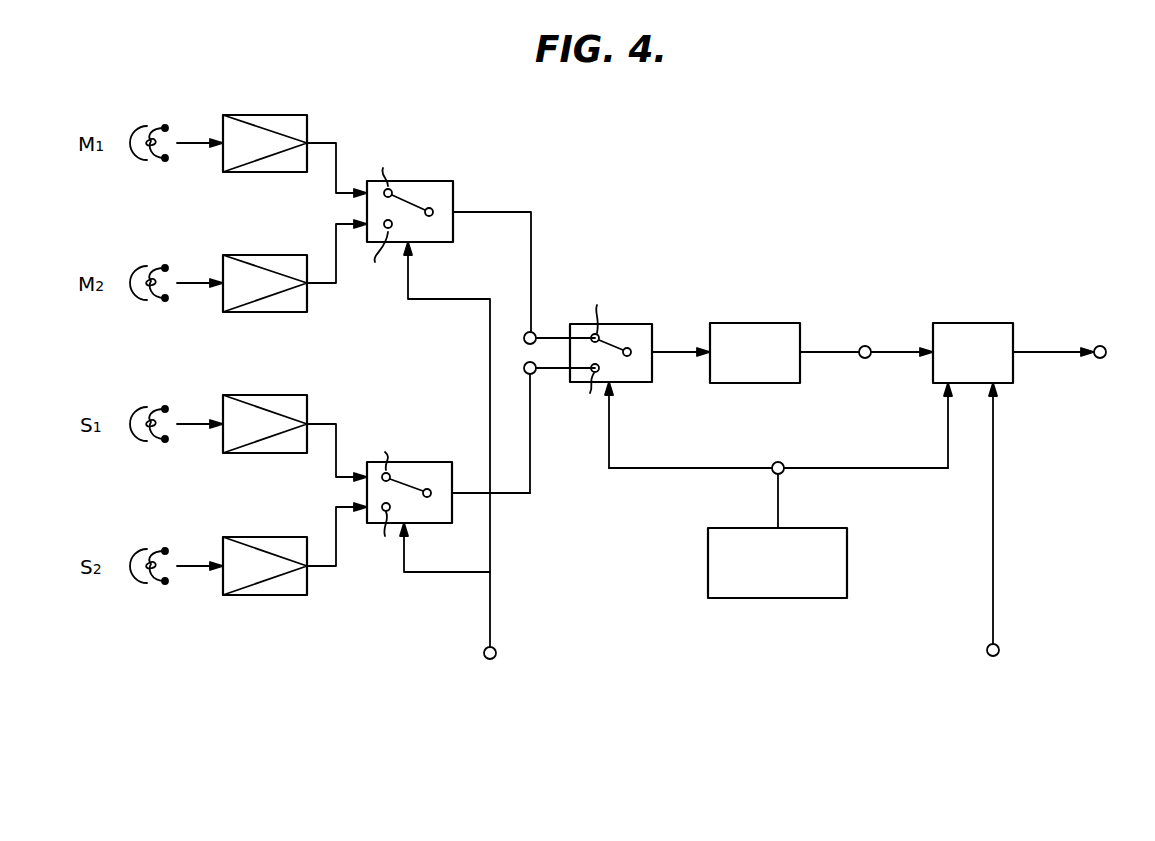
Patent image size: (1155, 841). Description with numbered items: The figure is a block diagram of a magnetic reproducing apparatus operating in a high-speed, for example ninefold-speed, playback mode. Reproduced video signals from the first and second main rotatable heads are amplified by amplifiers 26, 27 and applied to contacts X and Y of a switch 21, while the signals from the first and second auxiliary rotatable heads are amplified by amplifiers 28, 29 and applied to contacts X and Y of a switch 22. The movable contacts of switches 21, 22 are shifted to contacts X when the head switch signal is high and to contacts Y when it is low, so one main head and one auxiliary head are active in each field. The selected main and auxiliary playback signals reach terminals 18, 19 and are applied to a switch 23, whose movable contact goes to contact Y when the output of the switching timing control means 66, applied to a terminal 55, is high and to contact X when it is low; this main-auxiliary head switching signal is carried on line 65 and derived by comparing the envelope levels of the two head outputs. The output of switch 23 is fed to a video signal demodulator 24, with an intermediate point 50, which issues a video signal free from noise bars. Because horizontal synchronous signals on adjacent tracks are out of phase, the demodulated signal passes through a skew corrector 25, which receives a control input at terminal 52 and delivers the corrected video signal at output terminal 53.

The terminal 18 is at (535, 334).
The terminal 19 is at (526, 374).
The switch 21 is at (432, 181).
The switch 22 is at (445, 462).
The switch 23 is at (640, 324).
The video signal demodulator 24 is at (722, 323).
The skew corrector 25 is at (950, 323).
The amplifier 26 is at (285, 115).
The amplifier 27 is at (266, 255).
The amplifier 28 is at (256, 395).
The amplifier 29 is at (237, 537).
The output terminal 50 is at (865, 345).
The control input terminal 52 is at (998, 648).
The output terminal 53 is at (1106, 349).
The terminal 55 is at (492, 660).
The switch timing line 65 is at (782, 463).
The switching timing control means 66 is at (708, 563).